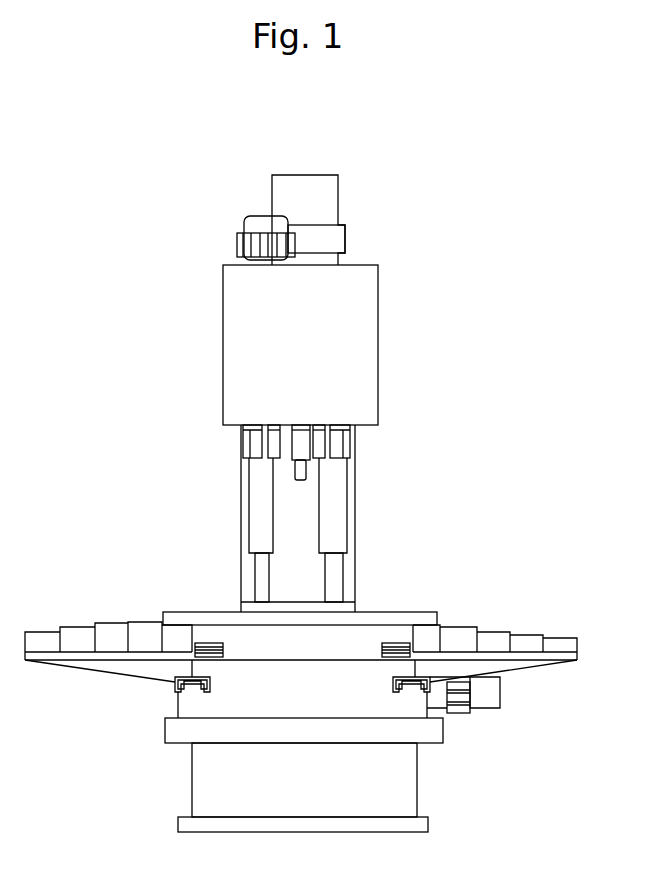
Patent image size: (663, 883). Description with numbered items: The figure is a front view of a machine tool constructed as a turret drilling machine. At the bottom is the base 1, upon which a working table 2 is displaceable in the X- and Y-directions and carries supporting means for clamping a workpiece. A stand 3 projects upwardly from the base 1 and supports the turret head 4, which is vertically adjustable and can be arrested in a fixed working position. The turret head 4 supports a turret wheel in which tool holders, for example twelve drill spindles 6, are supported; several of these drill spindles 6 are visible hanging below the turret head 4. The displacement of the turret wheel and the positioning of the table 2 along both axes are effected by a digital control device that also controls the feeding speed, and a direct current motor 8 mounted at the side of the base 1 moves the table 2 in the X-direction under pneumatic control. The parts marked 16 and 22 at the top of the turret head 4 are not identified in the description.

The base 1 is at (397, 787).
The working table 2 is at (415, 615).
The stand 3 is at (313, 583).
The turret head 4 is at (360, 350).
The drill spindles 6 is at (250, 424).
The direct current motor 8 is at (485, 698).
The adjusting knob 16 is at (257, 227).
The drive motor 22 is at (333, 207).